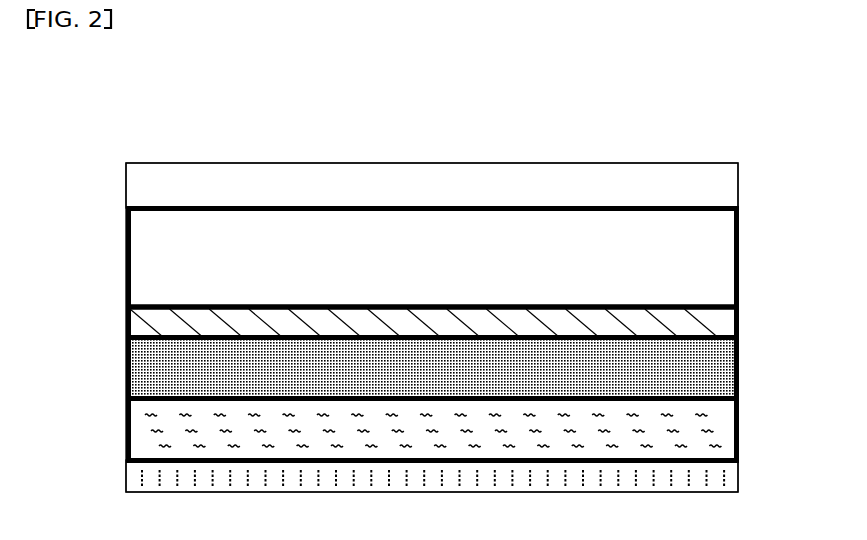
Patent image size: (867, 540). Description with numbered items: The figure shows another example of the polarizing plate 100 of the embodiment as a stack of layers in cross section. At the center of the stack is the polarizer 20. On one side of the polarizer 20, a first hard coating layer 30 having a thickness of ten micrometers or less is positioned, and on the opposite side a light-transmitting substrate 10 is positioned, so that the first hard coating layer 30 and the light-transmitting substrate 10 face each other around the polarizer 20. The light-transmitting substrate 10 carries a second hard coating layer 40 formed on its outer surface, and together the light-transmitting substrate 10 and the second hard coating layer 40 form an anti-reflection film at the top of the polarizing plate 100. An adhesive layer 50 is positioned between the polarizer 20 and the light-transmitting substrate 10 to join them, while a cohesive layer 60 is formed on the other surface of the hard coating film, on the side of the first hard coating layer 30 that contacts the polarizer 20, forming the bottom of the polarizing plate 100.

The polarizing plate 100 is at (725, 131).
The second hard coating layer 40 is at (722, 188).
The light-transmitting substrate 10 is at (725, 259).
The adhesive layer 50 is at (728, 323).
The polarizer 20 is at (725, 375).
The first hard coating layer 30 is at (728, 428).
The cohesive layer 60 is at (730, 479).